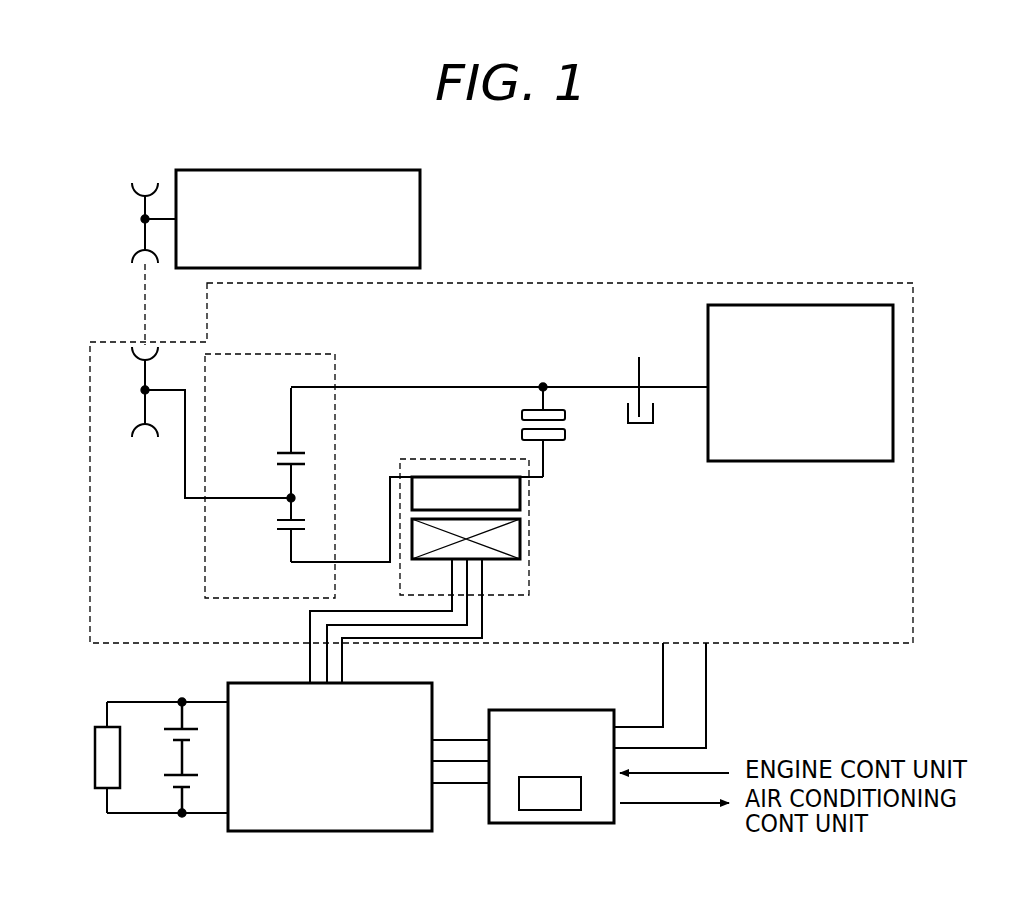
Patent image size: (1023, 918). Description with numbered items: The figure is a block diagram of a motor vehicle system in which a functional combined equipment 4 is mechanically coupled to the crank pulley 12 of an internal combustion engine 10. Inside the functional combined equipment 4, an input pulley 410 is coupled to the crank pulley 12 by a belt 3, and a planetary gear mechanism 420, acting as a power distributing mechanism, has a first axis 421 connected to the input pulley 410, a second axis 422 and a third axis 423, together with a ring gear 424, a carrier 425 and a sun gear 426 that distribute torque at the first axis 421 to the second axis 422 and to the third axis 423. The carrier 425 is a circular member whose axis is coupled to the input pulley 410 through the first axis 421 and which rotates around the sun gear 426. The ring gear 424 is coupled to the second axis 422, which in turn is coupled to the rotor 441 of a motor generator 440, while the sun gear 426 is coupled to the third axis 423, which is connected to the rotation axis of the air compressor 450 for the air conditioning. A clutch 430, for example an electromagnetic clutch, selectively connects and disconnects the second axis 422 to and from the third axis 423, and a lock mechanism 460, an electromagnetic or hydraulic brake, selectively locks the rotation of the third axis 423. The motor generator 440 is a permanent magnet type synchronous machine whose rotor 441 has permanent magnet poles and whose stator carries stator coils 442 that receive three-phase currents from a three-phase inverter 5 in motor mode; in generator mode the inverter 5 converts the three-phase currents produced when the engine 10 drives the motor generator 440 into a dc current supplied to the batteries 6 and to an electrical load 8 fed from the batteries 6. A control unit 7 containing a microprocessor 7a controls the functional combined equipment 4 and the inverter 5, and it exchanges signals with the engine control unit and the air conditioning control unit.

The belt 3 is at (143, 291).
The functional combined equipment 4 is at (518, 282).
The three-phase inverter 5 is at (246, 683).
The batteries 6 is at (175, 724).
The control unit 7 is at (551, 773).
The microprocessor 7a is at (549, 812).
The electrical load 8 is at (94, 757).
The internal combustion engine 10 is at (307, 170).
The crank pulley 12 is at (143, 183).
The input pulley 410 is at (148, 433).
The planetary gear mechanism 420 is at (268, 352).
The first axis 421 is at (188, 502).
The second axis 422 is at (352, 560).
The third axis 423 is at (355, 386).
The ring gear 424 is at (285, 545).
The carrier 425 is at (276, 462).
The sun gear 426 is at (290, 433).
The clutch 430 is at (553, 443).
The motor generator 440 is at (504, 548).
The rotor 441 is at (523, 488).
The stator coils 442 is at (523, 540).
The air compressor 450 is at (803, 463).
The lock mechanism 460 is at (650, 425).